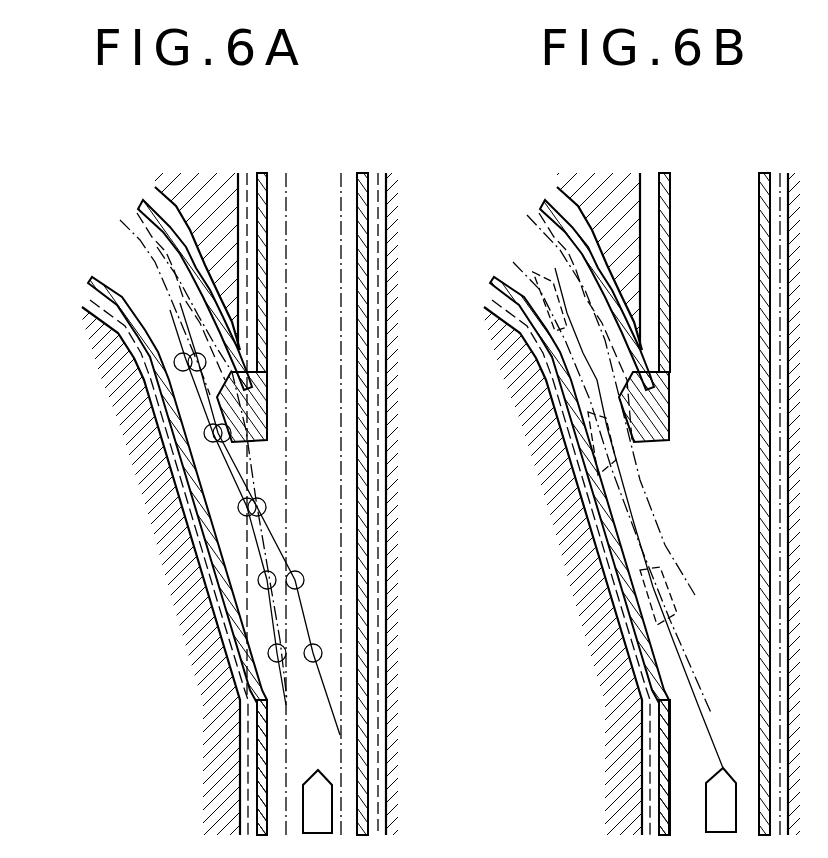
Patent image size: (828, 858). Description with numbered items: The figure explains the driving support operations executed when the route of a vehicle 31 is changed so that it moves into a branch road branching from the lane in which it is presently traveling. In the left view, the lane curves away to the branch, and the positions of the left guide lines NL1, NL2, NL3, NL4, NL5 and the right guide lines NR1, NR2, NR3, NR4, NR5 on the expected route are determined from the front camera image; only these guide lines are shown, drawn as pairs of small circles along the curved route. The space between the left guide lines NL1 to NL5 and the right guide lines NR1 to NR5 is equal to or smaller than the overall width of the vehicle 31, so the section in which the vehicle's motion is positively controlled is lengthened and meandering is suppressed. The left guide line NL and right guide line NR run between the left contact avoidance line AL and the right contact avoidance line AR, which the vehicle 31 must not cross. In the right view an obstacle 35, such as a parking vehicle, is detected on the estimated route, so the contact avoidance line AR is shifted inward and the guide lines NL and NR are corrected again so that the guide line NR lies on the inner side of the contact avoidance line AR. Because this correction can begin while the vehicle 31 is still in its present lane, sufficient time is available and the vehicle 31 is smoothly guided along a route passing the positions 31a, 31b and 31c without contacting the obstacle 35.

In FIG. 6A, the left contact avoidance line AL is at (90, 298).
In FIG. 6B, the left contact avoidance line AL is at (487, 294).
In FIG. 6A, the left guide line NL is at (157, 266).
In FIG. 6B, the left guide line NL is at (513, 260).
In FIG. 6A, the right guide line NR is at (118, 216).
In FIG. 6B, the right guide line NR is at (526, 214).
In FIG. 6A, the right contact avoidance line AR is at (128, 210).
In FIG. 6B, the right contact avoidance line AR is at (530, 207).
In FIG. 6A, the obstacle 35 is at (252, 428).
In FIG. 6B, the obstacle 35 is at (660, 418).
In FIG. 6A, the vehicle 31 is at (317, 770).
In FIG. 6B, the vehicle 31 is at (727, 768).
In FIG. 6B, the position of the vehicle 31a is at (677, 608).
In FIG. 6B, the position of the vehicle 31b is at (612, 466).
In FIG. 6B, the position of the vehicle 31c is at (528, 282).
In FIG. 6A, the left guide line NL1 is at (282, 663).
In FIG. 6A, the left guide line NL2 is at (258, 580).
In FIG. 6A, the left guide line NL3 is at (238, 507).
In FIG. 6A, the left guide line NL4 is at (204, 432).
In FIG. 6A, the left guide line NL5 is at (174, 361).
In FIG. 6A, the right guide line NR1 is at (313, 644).
In FIG. 6A, the right guide line NR2 is at (297, 572).
In FIG. 6A, the right guide line NR3 is at (262, 506).
In FIG. 6A, the right guide line NR4 is at (222, 442).
In FIG. 6A, the right guide line NR5 is at (190, 353).